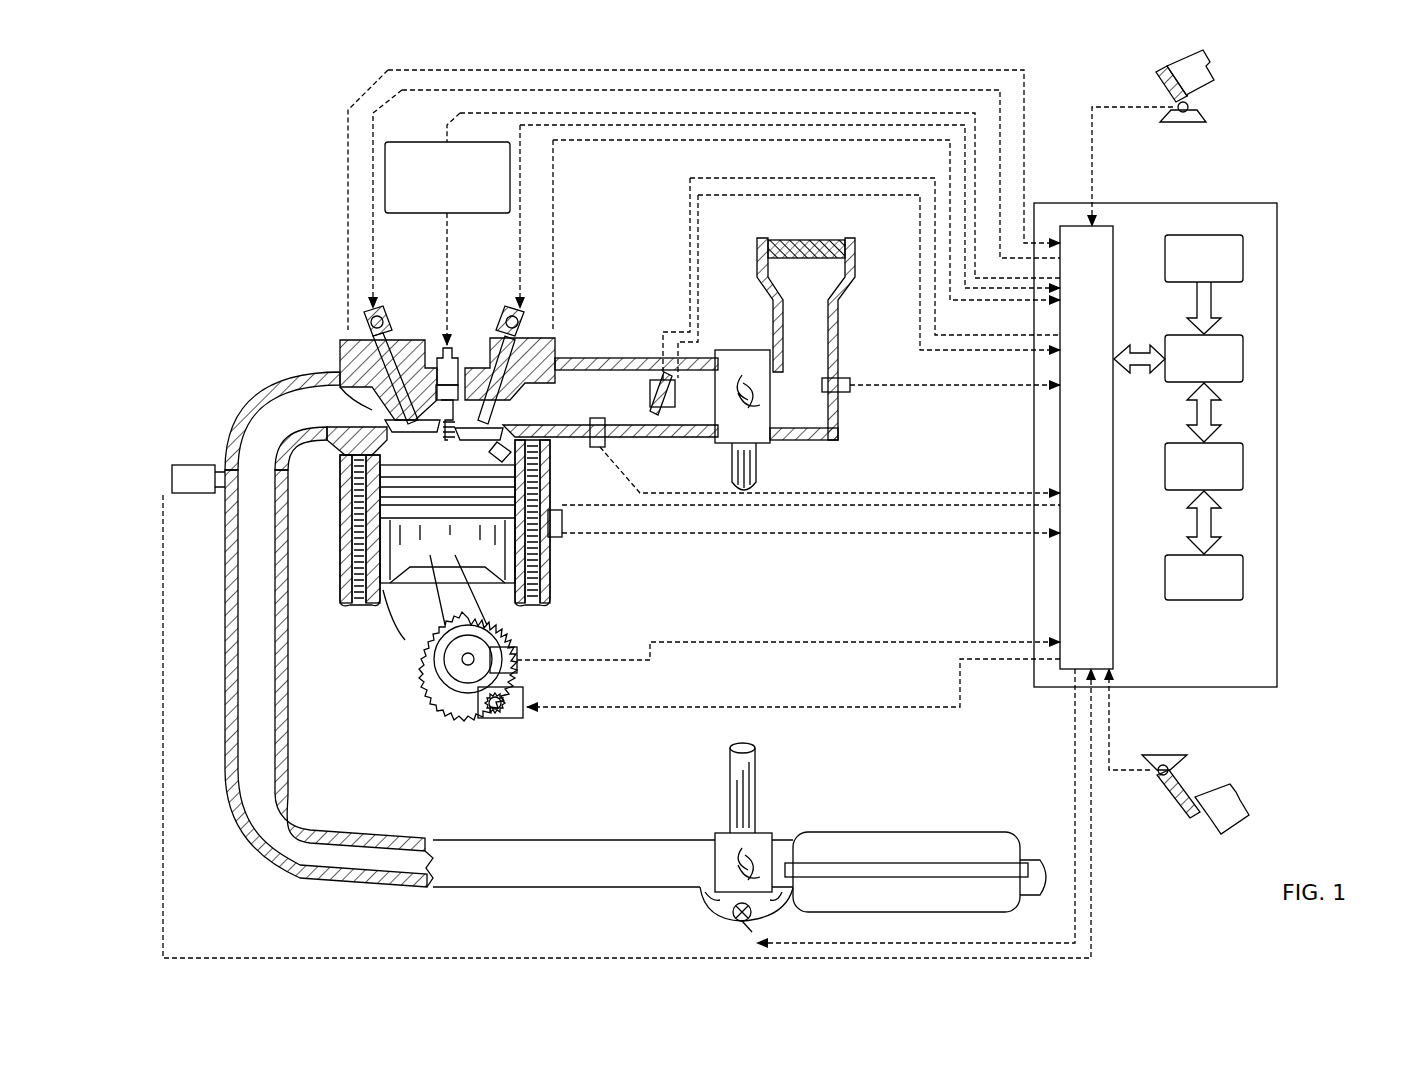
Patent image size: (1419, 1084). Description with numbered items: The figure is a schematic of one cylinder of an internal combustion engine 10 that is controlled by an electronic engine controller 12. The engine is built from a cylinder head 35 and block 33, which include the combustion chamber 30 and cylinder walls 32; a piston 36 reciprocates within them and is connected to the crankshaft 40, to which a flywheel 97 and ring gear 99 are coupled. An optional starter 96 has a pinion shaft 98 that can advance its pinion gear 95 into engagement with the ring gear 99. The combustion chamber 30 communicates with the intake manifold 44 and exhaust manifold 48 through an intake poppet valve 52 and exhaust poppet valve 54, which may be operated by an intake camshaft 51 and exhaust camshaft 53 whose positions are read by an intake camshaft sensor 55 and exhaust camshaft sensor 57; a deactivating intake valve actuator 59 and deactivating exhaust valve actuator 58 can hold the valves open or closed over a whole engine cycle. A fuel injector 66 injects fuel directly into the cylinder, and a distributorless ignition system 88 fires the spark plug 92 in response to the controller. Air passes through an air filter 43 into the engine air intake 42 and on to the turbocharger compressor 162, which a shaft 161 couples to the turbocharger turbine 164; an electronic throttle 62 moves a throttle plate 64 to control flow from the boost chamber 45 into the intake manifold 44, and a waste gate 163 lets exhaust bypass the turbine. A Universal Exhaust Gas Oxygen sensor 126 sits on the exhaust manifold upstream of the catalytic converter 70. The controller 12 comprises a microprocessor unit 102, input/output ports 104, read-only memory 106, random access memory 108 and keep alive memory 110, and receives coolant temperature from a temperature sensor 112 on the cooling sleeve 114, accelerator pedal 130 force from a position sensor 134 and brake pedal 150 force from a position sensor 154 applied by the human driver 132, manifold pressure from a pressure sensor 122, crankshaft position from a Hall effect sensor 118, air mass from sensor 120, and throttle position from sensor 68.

The internal combustion engine 10 is at (270, 290).
The electronic engine controller 12 is at (1265, 203).
The combustion chamber 30 is at (360, 540).
The cylinder walls 32 is at (378, 600).
The block 33 is at (338, 488).
The cylinder head 35 is at (337, 338).
The piston 36 is at (425, 590).
The crankshaft 40 is at (447, 688).
The engine air intake 42 is at (860, 246).
The air filter 43 is at (820, 252).
The intake manifold 44 is at (558, 410).
The boost chamber 45 is at (679, 412).
The exhaust manifold 48 is at (291, 420).
The intake camshaft 51 is at (512, 308).
The intake poppet valve 52 is at (497, 405).
The exhaust camshaft 53 is at (378, 308).
The exhaust poppet valve 54 is at (365, 410).
The intake camshaft sensor 55 is at (535, 332).
The exhaust camshaft sensor 57 is at (355, 330).
The deactivating exhaust valve actuator 58 is at (392, 336).
The deactivating intake valve actuator 59 is at (502, 338).
The electronic throttle 62 is at (650, 392).
The throttle plate 64 is at (653, 412).
The fuel injector 66 is at (496, 452).
The throttle position sensor 68 is at (680, 375).
The catalytic converter 70 is at (840, 832).
The distributorless ignition system 88 is at (405, 142).
The spark plug 92 is at (447, 345).
The pinion gear 95 is at (505, 718).
The starter 96 is at (515, 718).
The flywheel 97 is at (440, 662).
The pinion shaft 98 is at (490, 715).
The ring gear 99 is at (457, 700).
The microprocessor unit 102 is at (1243, 355).
The input/output ports 104 is at (1115, 232).
The read-only memory 106 is at (1243, 255).
The random access memory 108 is at (1243, 465).
The keep alive memory 110 is at (1243, 578).
The temperature sensor 112 is at (562, 520).
The cooling sleeve 114 is at (540, 556).
The Hall effect sensor 118 is at (517, 650).
The air mass sensor 120 is at (848, 380).
The pressure sensor 122 is at (590, 452).
The Universal Exhaust Gas Oxygen sensor 126 is at (172, 470).
The accelerator pedal 130 is at (1155, 78).
The human driver 132 is at (1212, 70).
The position sensor 134 is at (1190, 107).
The brake pedal 150 is at (1182, 820).
The position sensor 154 is at (1150, 768).
The shaft 161 is at (757, 457).
The turbocharger compressor 162 is at (812, 440).
The waste gate 163 is at (733, 920).
The turbocharger turbine 164 is at (725, 830).